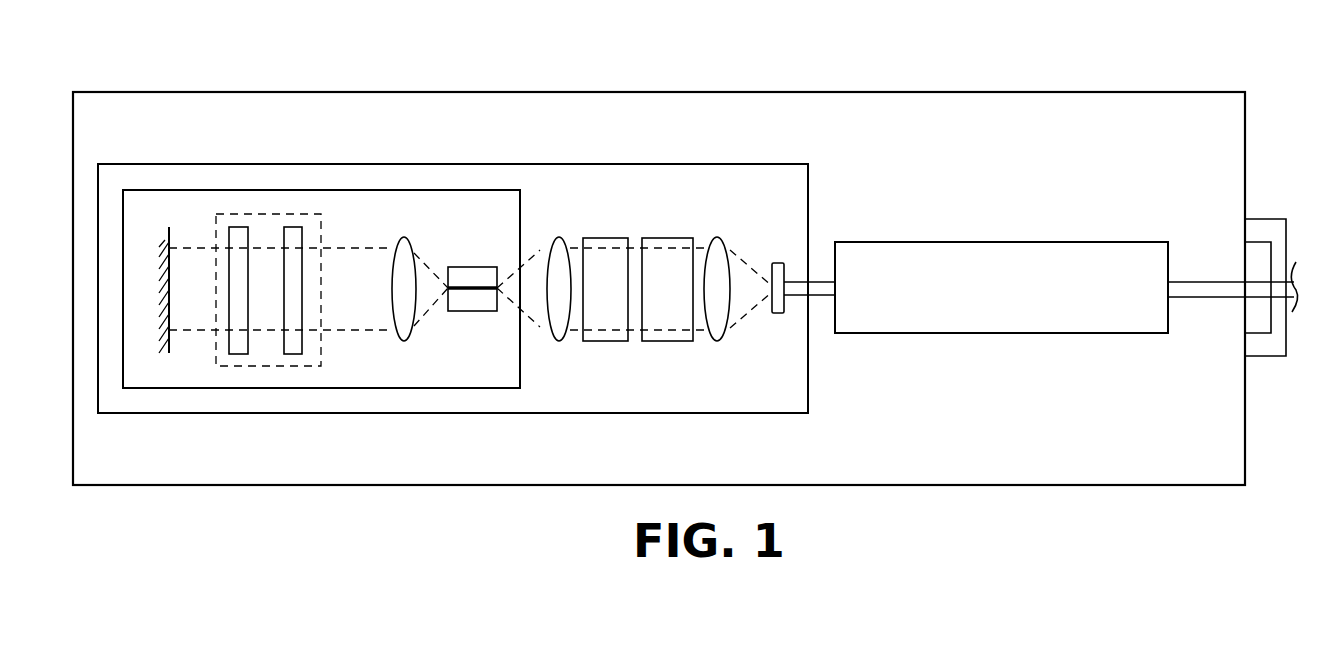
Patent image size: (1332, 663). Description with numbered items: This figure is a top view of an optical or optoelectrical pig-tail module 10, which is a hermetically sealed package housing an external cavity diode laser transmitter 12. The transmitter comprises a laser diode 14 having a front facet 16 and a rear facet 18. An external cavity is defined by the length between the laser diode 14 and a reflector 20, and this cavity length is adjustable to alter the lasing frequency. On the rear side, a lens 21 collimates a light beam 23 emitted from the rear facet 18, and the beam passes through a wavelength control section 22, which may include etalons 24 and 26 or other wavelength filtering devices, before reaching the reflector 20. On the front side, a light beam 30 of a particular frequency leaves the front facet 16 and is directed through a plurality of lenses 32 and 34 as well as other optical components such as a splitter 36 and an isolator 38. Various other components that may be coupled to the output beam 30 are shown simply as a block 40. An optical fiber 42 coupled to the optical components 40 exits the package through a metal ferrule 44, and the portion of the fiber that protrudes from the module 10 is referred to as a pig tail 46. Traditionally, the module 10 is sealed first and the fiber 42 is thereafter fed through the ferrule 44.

The pig-tail module 10 is at (1013, 92).
The external cavity diode laser transmitter 12 is at (808, 391).
The laser diode 14 is at (472, 311).
The front facet 16 is at (504, 277).
The rear facet 18 is at (443, 277).
The reflector 20 is at (169, 353).
The lens 21 is at (405, 237).
The wavelength control section 22 is at (280, 214).
The light beam 23 is at (347, 332).
The etalon 24 is at (239, 227).
The etalon 26 is at (293, 227).
The light beam 30 is at (530, 261).
The lens 32 is at (560, 237).
The lens 34 is at (718, 237).
The splitter 36 is at (605, 341).
The isolator 38 is at (665, 341).
The block of optical components 40 is at (1046, 257).
The optical fiber 42 is at (1218, 282).
The metal ferrule 44 is at (1265, 219).
The pig tail 46 is at (1282, 300).